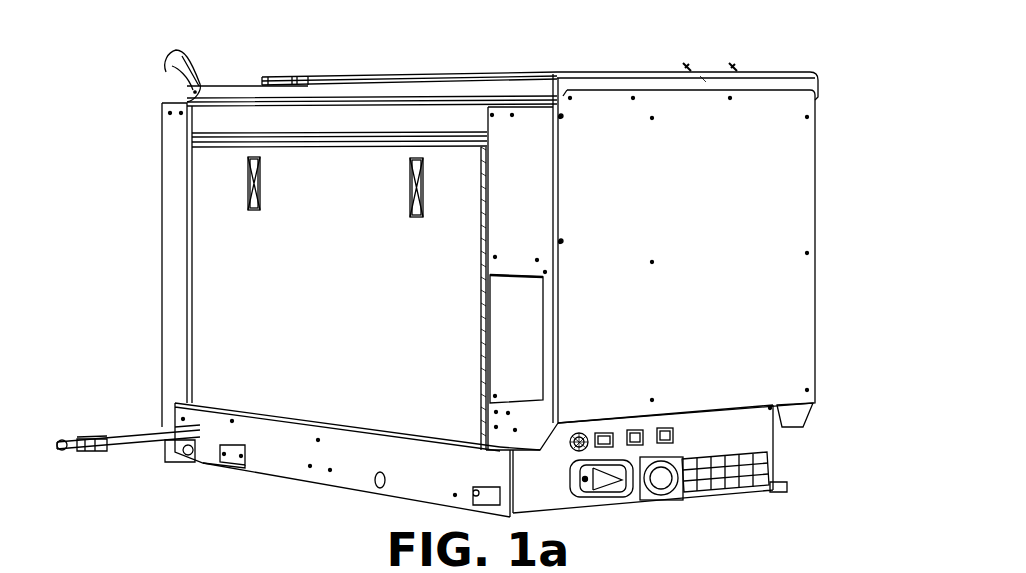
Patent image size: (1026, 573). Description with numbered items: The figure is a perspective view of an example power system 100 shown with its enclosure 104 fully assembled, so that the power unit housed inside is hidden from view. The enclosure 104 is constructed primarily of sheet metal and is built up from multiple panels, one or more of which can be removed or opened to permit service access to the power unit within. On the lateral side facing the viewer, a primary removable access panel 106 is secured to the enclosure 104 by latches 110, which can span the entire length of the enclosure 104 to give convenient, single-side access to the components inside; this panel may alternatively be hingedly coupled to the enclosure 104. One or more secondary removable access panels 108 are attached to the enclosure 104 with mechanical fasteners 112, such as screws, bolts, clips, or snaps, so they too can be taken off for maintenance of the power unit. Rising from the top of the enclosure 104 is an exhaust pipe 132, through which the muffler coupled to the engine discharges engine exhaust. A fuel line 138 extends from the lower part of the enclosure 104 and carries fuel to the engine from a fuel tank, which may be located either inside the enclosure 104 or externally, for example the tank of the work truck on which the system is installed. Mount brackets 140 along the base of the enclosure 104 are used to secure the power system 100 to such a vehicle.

The power system 100 is at (88, 0).
The enclosure 104 is at (757, 52).
The primary removable access panel 106 is at (277, 277).
The secondary removable access panel 108 is at (775, 233).
The latch 110 is at (260, 188).
The mechanical fastener 112 is at (566, 116).
The exhaust pipe 132 is at (198, 68).
The fuel line 138 is at (118, 432).
The mount bracket 140 is at (238, 468).